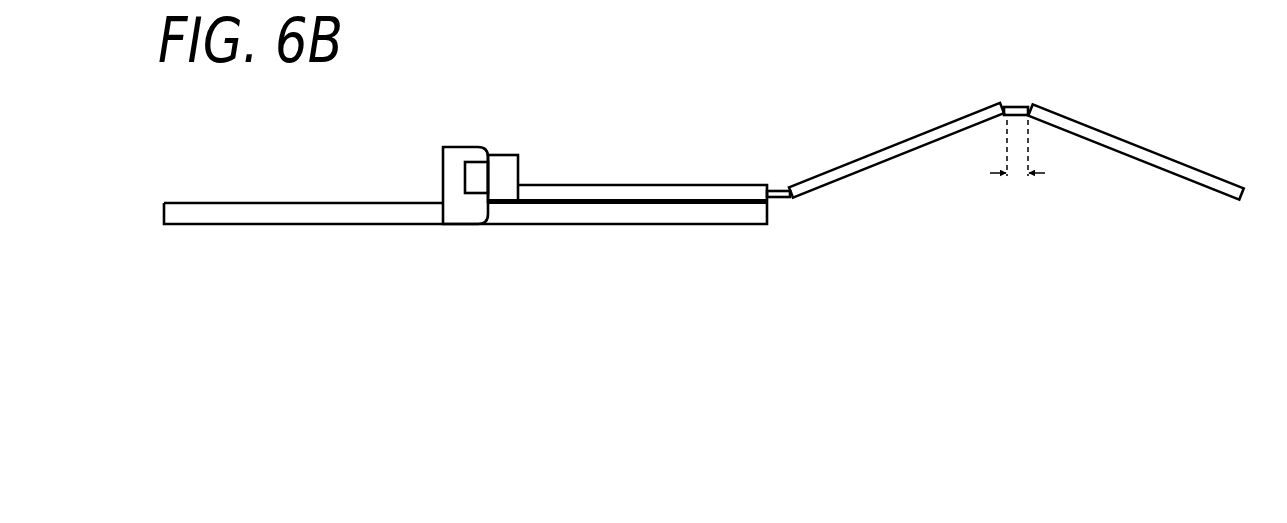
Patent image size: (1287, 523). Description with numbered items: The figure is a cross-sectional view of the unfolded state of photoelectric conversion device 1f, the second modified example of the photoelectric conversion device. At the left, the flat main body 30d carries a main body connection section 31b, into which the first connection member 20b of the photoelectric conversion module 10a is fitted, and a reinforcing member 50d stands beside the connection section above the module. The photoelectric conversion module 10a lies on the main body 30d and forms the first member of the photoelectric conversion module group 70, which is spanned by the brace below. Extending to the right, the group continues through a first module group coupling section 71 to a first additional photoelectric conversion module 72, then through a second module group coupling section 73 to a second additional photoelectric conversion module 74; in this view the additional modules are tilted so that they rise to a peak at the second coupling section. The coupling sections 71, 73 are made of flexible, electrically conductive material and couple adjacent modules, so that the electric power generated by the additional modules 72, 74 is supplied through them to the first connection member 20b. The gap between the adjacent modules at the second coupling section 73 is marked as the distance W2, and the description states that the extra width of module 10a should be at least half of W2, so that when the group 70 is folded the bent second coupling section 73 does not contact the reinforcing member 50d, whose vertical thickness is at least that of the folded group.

The photoelectric conversion device 1f is at (350, 163).
The main body 30d is at (268, 228).
The main body connection section 31b is at (445, 147).
The first connection member 20b is at (478, 172).
The reinforcing member 50d is at (507, 160).
The photoelectric conversion module 10a is at (650, 190).
The photoelectric conversion module group 70 is at (517, 247).
The first module group coupling section 71 is at (775, 190).
The first additional photoelectric conversion module 72 is at (895, 147).
The second module group coupling section 73 is at (1017, 107).
The second additional photoelectric conversion module 74 is at (1157, 155).
The distance between adjacent photoelectric conversion modules W2 is at (1017, 163).